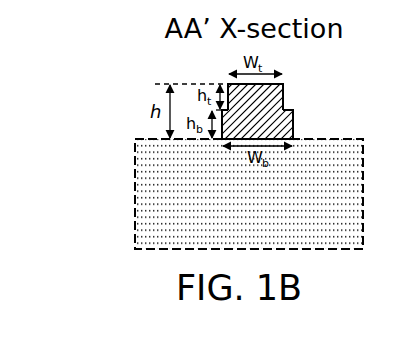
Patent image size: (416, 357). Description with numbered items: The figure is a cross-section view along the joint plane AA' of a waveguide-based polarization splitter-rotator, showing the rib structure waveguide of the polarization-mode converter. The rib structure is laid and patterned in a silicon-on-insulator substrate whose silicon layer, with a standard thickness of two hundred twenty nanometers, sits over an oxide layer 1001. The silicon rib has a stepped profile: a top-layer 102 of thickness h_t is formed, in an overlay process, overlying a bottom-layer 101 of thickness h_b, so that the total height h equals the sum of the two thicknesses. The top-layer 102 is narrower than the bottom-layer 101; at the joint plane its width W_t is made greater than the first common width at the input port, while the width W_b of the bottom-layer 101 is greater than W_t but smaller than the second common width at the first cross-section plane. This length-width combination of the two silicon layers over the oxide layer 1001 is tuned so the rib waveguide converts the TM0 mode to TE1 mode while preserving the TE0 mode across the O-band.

The bottom-layer 101 is at (294, 126).
The top-layer 102 is at (284, 97).
The oxide layer 1001 is at (364, 188).